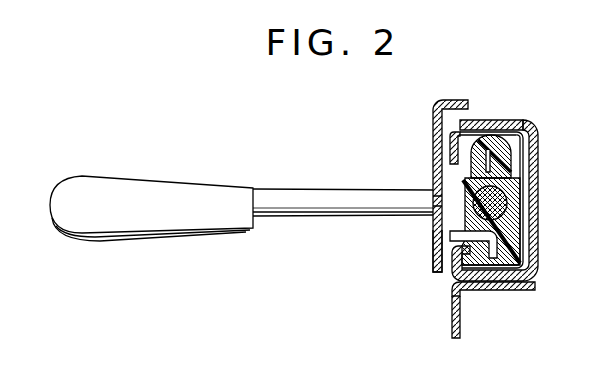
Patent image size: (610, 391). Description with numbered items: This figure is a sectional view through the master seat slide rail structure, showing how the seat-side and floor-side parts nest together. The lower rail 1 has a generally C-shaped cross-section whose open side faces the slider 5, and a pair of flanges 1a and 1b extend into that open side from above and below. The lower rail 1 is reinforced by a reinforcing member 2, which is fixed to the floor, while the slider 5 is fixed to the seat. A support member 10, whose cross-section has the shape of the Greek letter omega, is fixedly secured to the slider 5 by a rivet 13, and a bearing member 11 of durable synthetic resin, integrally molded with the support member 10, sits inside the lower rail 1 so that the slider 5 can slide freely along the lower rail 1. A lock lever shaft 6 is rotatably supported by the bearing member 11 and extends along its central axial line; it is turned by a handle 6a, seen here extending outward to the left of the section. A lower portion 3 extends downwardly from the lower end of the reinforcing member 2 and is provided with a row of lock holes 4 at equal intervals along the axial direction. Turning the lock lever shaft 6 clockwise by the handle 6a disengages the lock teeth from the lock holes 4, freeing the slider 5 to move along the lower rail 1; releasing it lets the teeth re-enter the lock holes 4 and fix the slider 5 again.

The lower rail 1 is at (485, 120).
The flange 1a is at (449, 150).
The flange 1b is at (437, 257).
The reinforcing member 2 is at (528, 124).
The lower portion 3 is at (460, 330).
The lock holes 4 is at (460, 310).
The slider 5 is at (437, 107).
The lock lever shaft 6 is at (333, 189).
The handle 6a is at (181, 186).
The support member 10 is at (490, 158).
The bearing member 11 is at (512, 253).
The rivet 13 is at (432, 200).